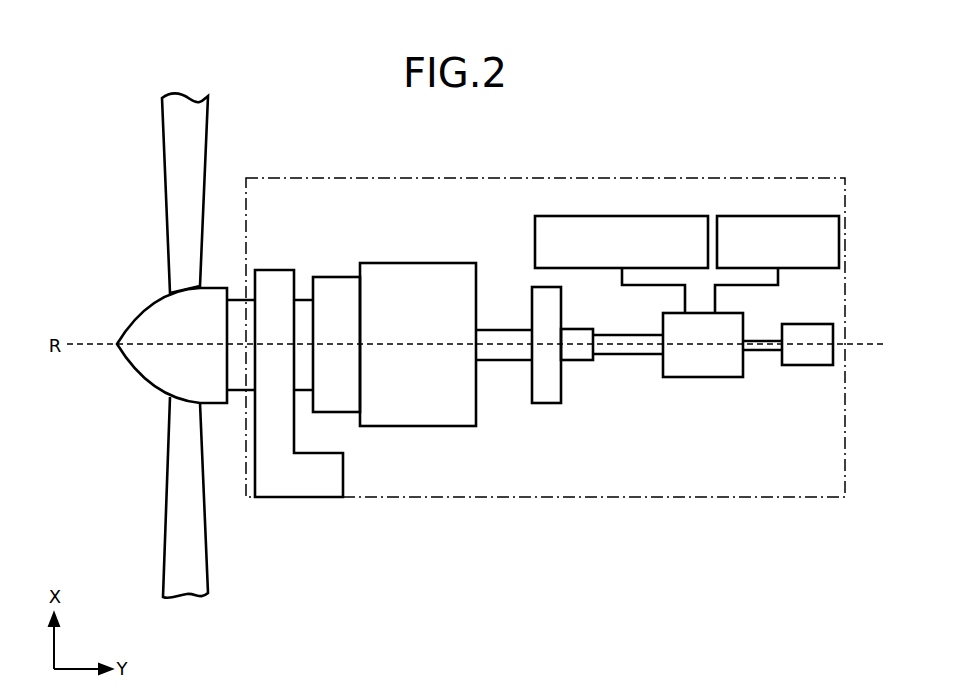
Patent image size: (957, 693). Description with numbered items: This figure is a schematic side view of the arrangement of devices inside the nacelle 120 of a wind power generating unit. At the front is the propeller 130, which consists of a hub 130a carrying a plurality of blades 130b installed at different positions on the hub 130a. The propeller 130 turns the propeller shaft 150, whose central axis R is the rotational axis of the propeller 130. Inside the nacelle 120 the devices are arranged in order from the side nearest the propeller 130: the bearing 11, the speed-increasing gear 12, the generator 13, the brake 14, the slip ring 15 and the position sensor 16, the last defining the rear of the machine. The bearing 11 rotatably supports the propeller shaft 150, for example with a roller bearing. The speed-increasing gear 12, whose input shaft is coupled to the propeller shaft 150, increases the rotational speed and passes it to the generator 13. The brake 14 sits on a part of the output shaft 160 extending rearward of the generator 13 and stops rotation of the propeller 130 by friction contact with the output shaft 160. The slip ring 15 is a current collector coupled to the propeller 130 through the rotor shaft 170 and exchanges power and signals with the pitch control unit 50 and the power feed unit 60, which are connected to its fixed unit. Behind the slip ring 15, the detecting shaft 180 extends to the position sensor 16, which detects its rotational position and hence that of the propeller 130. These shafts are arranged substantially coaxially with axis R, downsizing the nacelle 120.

The bearing 11 is at (300, 497).
The speed-increasing gear 12 is at (333, 277).
The generator 13 is at (415, 263).
The brake 14 is at (561, 296).
The slip ring 15 is at (703, 377).
The position sensor 16 is at (808, 365).
The pitch control unit 50 is at (632, 216).
The power feed unit 60 is at (785, 216).
The nacelle 120 is at (553, 177).
The propeller 130 is at (130, 346).
The hub 130a is at (157, 334).
The blade 130b is at (170, 220).
The propeller shaft 150 is at (238, 390).
The output shaft 160 is at (503, 360).
The rotor shaft 170 is at (627, 354).
The detecting shaft 180 is at (763, 350).